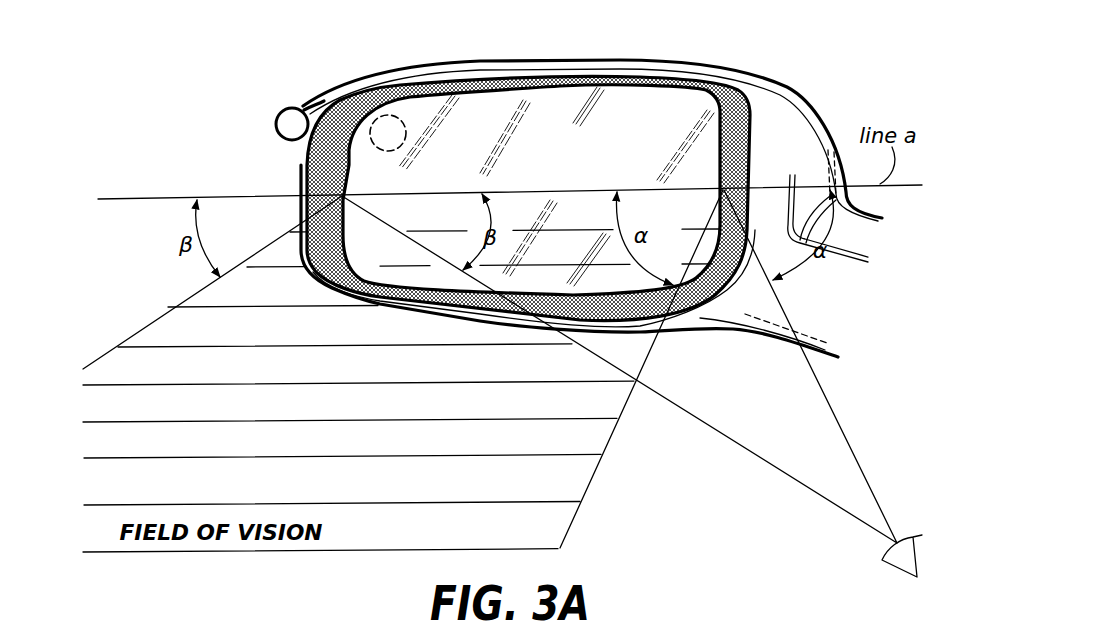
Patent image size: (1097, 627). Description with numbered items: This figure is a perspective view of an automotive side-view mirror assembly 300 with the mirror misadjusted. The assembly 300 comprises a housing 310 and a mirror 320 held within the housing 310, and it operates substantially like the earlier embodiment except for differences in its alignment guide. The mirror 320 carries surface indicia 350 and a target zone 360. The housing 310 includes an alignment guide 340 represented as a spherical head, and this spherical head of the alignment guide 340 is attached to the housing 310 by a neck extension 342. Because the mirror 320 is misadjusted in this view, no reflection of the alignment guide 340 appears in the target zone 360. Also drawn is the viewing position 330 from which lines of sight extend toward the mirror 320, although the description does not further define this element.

The side-view mirror assembly 300 is at (732, 51).
The housing 310 is at (806, 101).
The mirror 320 is at (638, 100).
The eye of the driver (viewpoint) 330 is at (880, 557).
The alignment guide 340 is at (276, 117).
The neck extension 342 is at (312, 102).
The surface indicia 350 is at (390, 125).
The target zone 360 is at (387, 132).